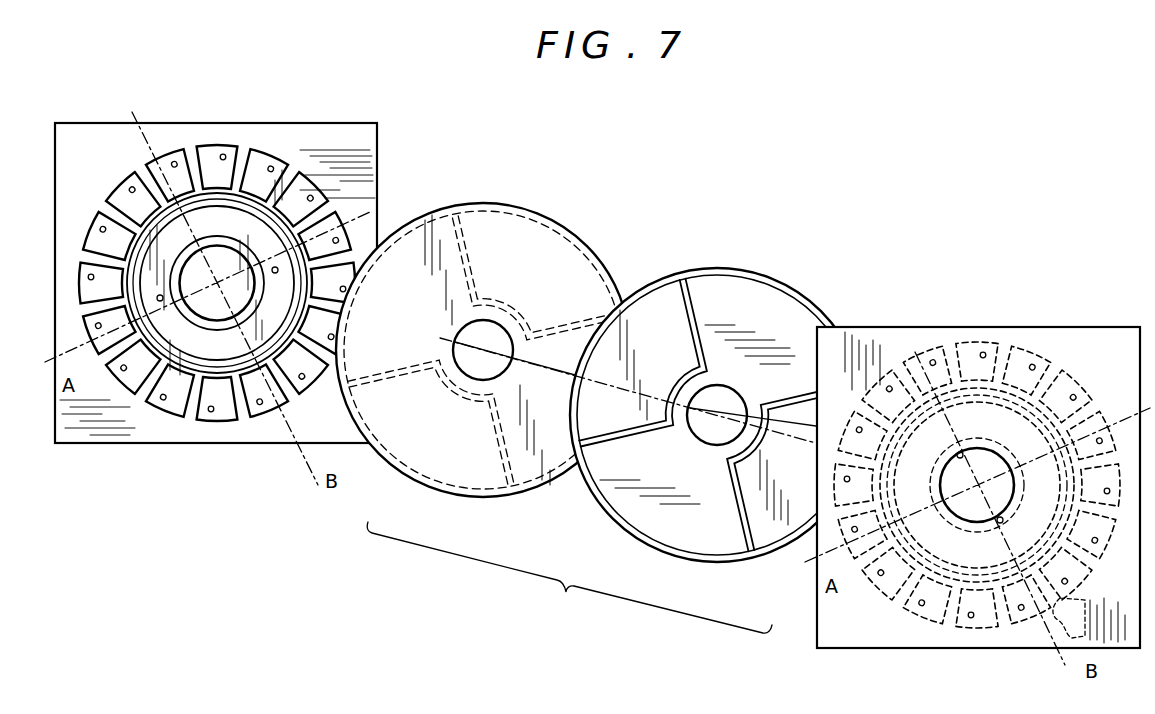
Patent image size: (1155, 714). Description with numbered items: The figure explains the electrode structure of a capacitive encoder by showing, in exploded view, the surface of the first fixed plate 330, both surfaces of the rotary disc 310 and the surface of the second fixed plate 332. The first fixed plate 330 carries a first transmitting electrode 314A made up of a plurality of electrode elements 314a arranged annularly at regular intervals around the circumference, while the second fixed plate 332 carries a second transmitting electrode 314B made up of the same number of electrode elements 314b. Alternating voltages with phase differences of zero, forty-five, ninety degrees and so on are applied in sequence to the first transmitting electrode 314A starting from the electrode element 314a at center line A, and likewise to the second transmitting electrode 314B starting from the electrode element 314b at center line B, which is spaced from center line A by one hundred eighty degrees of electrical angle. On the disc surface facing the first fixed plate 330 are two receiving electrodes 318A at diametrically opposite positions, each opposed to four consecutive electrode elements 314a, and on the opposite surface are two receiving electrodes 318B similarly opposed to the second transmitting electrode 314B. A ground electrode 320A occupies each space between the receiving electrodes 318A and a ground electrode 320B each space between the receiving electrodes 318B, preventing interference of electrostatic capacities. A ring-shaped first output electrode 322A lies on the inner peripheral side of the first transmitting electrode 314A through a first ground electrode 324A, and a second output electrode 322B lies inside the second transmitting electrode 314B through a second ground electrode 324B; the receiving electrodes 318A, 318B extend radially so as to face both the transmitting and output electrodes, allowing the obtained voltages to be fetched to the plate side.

The rotary disc 310 is at (580, 621).
The first transmitting electrode 314A is at (234, 142).
The electrode element 314a is at (313, 188).
The second transmitting electrode 314B is at (1014, 345).
The electrode element 314b is at (1087, 387).
The receiving electrode 318A is at (550, 258).
The receiving electrode 318B is at (665, 298).
The ground electrode 320A is at (415, 268).
The ground electrode 320B is at (773, 312).
The first output electrode 322A is at (183, 340).
The second output electrode 322B is at (940, 543).
The first ground electrode 324A is at (140, 238).
The second ground electrode 324B is at (1073, 594).
The first fixed plate 330 is at (238, 449).
The second fixed plate 332 is at (946, 674).